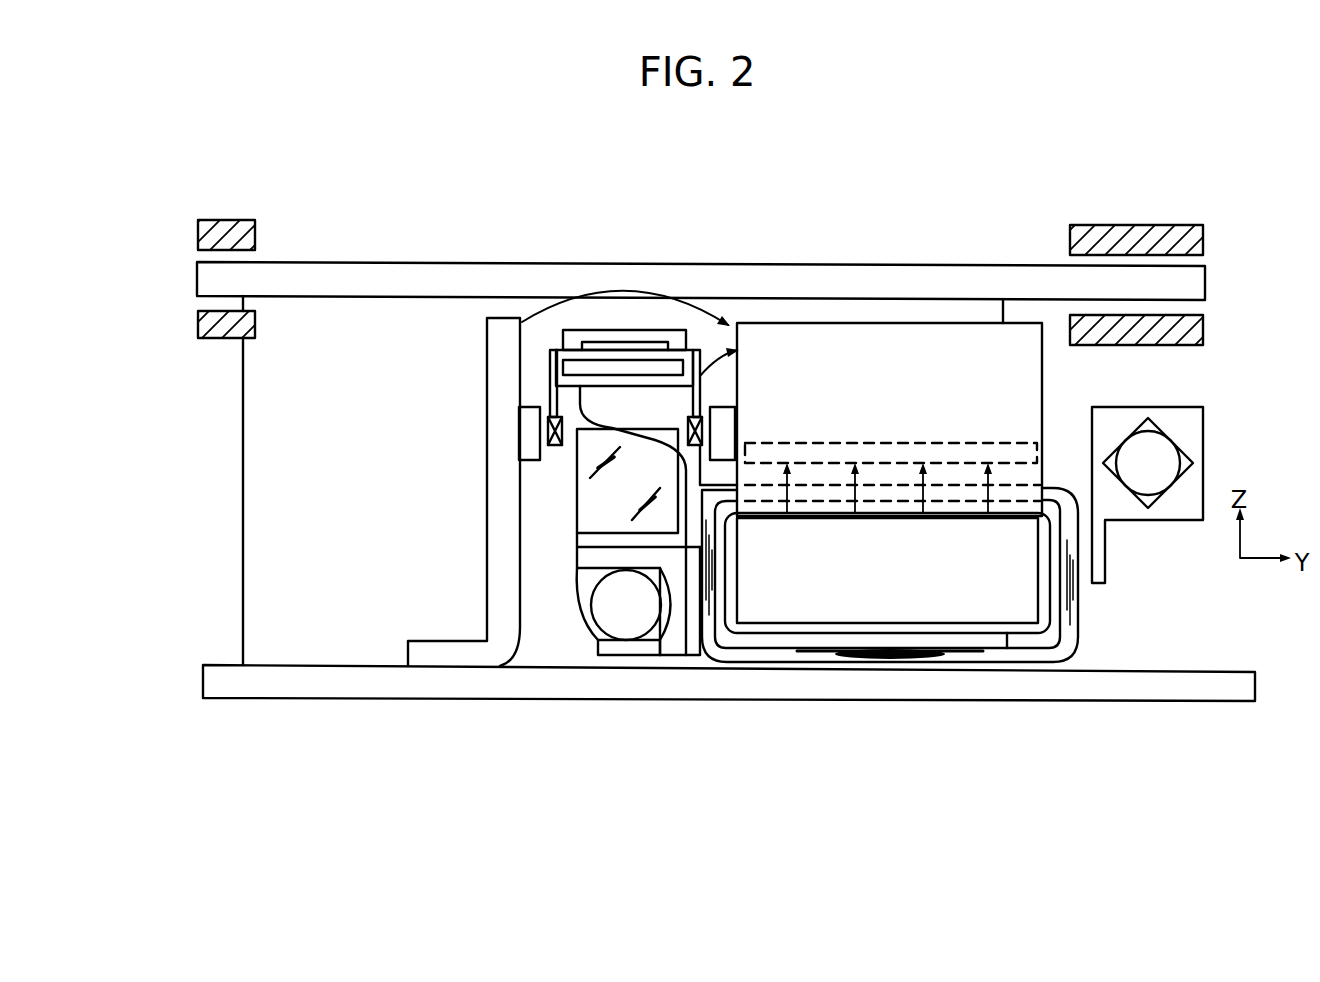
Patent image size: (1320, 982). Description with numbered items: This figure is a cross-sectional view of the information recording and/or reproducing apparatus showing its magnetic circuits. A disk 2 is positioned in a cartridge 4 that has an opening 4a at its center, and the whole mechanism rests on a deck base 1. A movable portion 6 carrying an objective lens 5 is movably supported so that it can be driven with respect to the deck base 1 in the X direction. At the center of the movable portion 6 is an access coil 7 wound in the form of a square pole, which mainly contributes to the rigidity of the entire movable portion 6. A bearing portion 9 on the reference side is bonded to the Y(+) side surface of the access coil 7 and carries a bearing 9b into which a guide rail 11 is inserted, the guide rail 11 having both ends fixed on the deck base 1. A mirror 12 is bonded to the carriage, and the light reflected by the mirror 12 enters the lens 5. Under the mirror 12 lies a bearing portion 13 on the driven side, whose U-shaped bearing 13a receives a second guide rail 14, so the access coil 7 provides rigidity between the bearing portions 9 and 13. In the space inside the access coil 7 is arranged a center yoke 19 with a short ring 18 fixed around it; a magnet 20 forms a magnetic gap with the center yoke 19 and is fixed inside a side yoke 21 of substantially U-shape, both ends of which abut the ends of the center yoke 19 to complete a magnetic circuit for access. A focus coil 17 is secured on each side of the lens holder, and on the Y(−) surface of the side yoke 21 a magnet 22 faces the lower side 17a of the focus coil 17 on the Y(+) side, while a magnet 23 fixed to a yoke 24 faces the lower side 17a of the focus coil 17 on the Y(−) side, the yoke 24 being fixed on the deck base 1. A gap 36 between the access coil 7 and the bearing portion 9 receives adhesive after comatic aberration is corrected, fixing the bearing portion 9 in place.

The deck base 1 is at (1168, 693).
The disk 2 is at (382, 273).
The cartridge 4 is at (1123, 238).
The opening 4a is at (1052, 330).
The objective lens 5 is at (620, 322).
The movable portion 6 is at (693, 672).
The access coil 7 is at (968, 657).
The bearing portion on reference side 9 is at (1205, 420).
The bearing 9b is at (1190, 458).
The guide rail 11 is at (1155, 497).
The mirror 12 is at (592, 517).
The bearing portion on driven side 13 is at (627, 650).
The U-shaped bearing 13a is at (607, 618).
The guide rail 14 is at (577, 570).
The focus coil 17 is at (698, 345).
The lower side of focus coil 17a is at (690, 433).
The short ring 18 is at (760, 625).
The center yoke 19 is at (860, 602).
The magnet 20 is at (983, 453).
The side yoke 21 is at (865, 330).
The magnet 22 is at (733, 415).
The magnet 23 is at (520, 407).
The yoke 24 is at (497, 470).
The gap 36 is at (1085, 582).